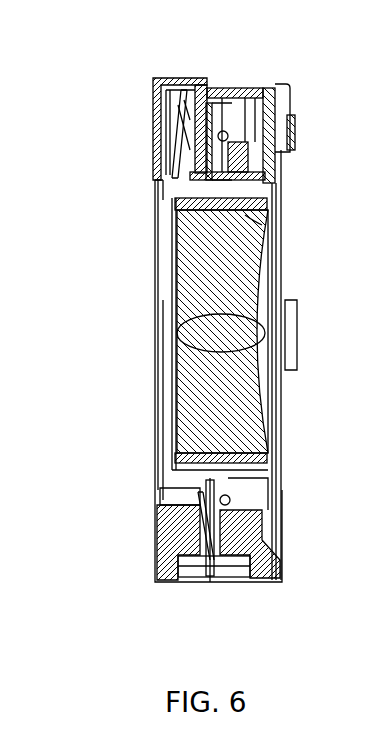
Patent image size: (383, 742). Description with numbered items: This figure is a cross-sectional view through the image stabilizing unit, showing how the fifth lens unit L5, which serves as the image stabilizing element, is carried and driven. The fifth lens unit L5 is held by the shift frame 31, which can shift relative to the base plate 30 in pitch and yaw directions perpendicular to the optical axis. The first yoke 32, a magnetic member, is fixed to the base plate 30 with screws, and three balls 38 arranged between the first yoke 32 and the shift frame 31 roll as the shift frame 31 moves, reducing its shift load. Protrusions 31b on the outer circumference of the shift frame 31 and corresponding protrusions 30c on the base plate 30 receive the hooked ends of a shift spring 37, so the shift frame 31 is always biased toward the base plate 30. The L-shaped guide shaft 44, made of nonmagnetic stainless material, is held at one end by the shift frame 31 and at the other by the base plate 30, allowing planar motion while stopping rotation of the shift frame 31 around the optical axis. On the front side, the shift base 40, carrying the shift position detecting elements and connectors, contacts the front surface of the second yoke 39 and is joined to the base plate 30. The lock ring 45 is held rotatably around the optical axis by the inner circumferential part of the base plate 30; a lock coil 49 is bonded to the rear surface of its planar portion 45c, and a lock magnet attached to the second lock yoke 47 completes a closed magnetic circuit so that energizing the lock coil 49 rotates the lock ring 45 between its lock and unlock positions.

The base plate 30 is at (201, 85).
The protrusions 30c is at (162, 580).
The shift frame 31 is at (250, 222).
The protrusions 31b is at (262, 578).
The first yoke 32 is at (205, 580).
The shift spring 37 is at (228, 570).
The balls 38 is at (215, 495).
The second yoke 39 is at (268, 92).
The shift base 40 is at (288, 86).
The guide shaft 44 is at (224, 131).
The lock ring 45 is at (168, 492).
The planar portion 45c is at (155, 88).
The second lock yoke 47 is at (155, 145).
The lock coil 49 is at (178, 95).
The fifth lens unit L5 is at (270, 302).